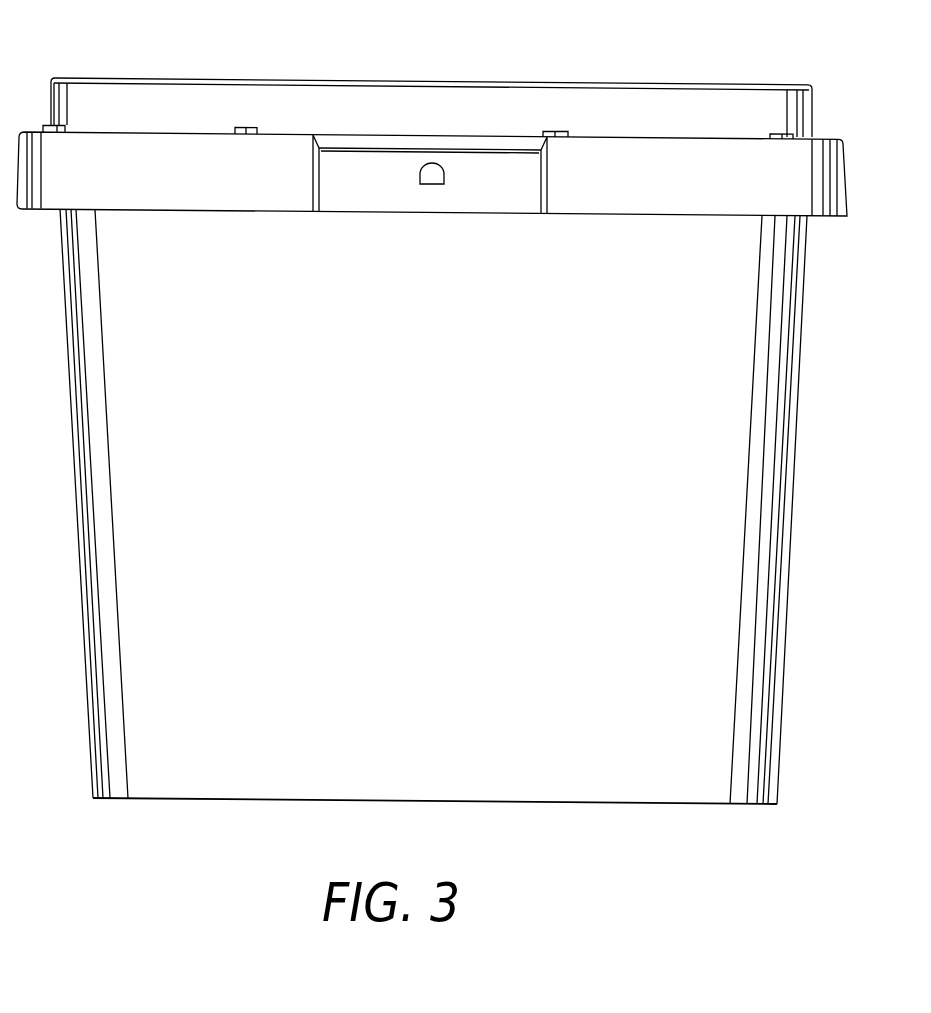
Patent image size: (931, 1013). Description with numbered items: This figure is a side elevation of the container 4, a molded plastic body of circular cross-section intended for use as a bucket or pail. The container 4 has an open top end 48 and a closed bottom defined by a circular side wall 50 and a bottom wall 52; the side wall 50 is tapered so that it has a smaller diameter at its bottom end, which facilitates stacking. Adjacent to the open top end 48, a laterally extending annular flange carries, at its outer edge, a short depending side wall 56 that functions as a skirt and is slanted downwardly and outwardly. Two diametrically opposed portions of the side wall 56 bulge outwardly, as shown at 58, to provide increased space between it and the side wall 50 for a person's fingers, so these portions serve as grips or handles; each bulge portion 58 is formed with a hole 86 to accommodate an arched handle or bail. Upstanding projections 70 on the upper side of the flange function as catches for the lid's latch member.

The container 4 is at (82, 40).
The open top end 48 is at (732, 82).
The circular side wall 50 is at (453, 462).
The bottom wall 52 is at (323, 801).
The depending side wall 56 is at (234, 193).
The bulge portion 58 is at (400, 198).
The upstanding projections 70 is at (236, 128).
The hole 86 is at (435, 176).